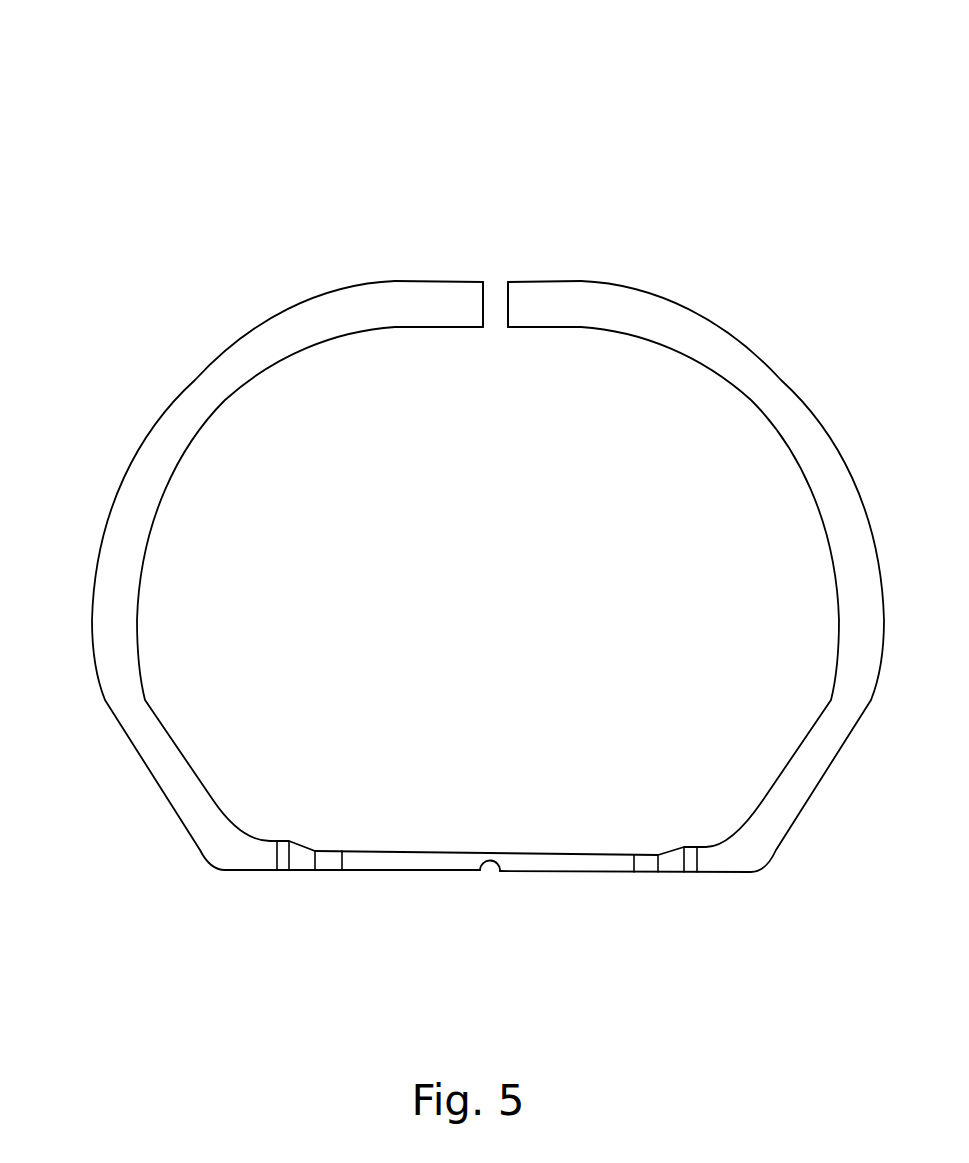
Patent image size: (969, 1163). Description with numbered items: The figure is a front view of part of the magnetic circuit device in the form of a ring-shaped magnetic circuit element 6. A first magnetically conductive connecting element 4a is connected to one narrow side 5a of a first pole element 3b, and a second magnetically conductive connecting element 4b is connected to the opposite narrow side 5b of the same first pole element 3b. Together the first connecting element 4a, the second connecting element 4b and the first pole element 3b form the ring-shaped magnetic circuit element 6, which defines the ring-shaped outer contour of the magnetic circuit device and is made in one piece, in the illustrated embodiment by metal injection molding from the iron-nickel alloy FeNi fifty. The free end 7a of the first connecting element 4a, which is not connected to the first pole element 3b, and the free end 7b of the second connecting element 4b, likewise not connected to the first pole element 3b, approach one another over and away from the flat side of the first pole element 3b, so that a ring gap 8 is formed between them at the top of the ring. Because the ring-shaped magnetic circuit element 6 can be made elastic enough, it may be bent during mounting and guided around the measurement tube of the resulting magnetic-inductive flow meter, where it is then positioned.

The ring-shaped magnetic circuit element 6 is at (285, 173).
The first magnetically conductive connecting element 4a is at (128, 568).
The second magnetically conductive connecting element 4b is at (848, 565).
The free end of the first connecting element 7a is at (485, 270).
The free end of the second connecting element 7b is at (518, 272).
The ring gap 8 is at (492, 332).
The first pole element 3b is at (575, 862).
The narrow side of the first pole element 5a is at (303, 860).
The opposite narrow side of the first pole element 5b is at (690, 869).